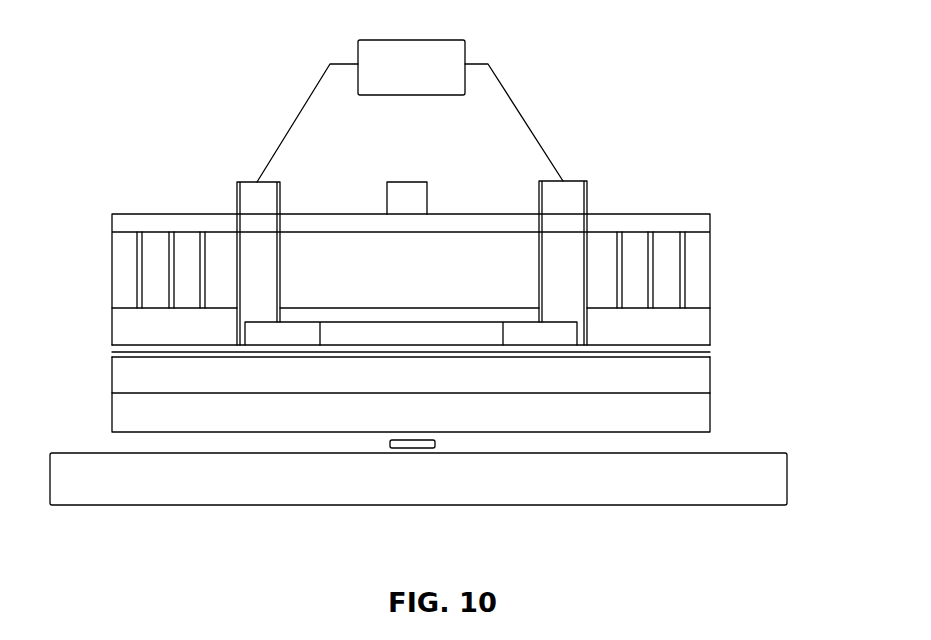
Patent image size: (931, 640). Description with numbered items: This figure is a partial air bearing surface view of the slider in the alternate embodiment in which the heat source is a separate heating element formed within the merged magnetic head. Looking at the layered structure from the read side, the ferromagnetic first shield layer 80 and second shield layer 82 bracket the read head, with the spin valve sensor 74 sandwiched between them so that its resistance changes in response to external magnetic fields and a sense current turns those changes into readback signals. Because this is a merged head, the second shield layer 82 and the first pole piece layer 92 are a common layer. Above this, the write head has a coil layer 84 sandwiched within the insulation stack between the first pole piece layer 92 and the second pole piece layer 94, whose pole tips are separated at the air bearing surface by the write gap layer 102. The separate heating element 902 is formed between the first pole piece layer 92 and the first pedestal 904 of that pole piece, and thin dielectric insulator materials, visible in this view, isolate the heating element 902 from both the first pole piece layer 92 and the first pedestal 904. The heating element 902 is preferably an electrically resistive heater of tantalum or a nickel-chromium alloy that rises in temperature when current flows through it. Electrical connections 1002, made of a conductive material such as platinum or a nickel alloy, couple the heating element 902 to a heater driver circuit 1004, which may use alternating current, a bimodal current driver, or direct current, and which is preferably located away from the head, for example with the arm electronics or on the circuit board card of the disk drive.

The heater driver circuit 1004 is at (392, 40).
The electrical connections 1002 is at (256, 176).
The coil layer 84 is at (153, 232).
The first P1 pedestal 904 is at (310, 268).
The heating element 902 is at (348, 335).
The second pole piece layer 94 is at (427, 184).
The write gap layer 102 is at (698, 226).
The first pole piece layer 92 is at (710, 374).
The second shield layer 82 is at (711, 410).
The first shield layer 80 is at (787, 468).
The spin valve sensor 74 is at (435, 446).